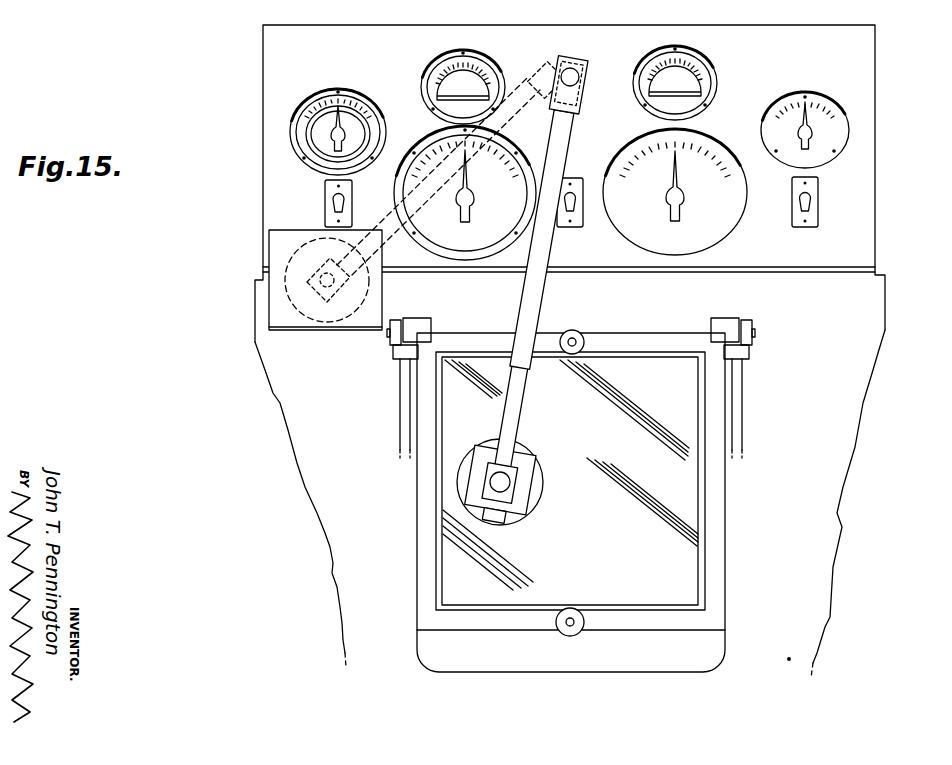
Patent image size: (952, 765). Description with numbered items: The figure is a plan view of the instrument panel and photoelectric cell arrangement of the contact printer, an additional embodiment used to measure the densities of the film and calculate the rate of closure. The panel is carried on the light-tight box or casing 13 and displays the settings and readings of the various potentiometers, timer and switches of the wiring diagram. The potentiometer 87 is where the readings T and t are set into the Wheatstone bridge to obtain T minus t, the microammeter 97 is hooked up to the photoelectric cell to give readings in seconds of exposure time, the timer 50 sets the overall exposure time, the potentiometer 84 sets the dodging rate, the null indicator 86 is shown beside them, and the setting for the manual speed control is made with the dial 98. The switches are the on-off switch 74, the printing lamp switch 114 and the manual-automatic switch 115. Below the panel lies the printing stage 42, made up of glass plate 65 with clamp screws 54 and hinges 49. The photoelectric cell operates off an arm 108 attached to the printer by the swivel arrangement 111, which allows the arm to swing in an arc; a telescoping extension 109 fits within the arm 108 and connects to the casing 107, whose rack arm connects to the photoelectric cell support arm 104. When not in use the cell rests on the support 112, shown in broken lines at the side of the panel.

The light-tight box or casing 13 is at (887, 337).
The printing stage 42 is at (733, 486).
The hinges 49 is at (390, 337).
The timer 50 is at (434, 255).
The clamp screws 54 is at (581, 337).
The glass plate 65 is at (628, 372).
The on-off switch 74 is at (352, 208).
The potentiometer 84 is at (744, 220).
The null indicator 86 is at (713, 74).
The potentiometer 87 is at (368, 101).
The microammeter 97 is at (487, 65).
The manual speed control dial 98 is at (835, 101).
The photoelectric cell support arm 104 is at (500, 516).
The casing 107 is at (544, 469).
The arm 108 is at (569, 139).
The telescoping extension 109 is at (520, 411).
The swivel arrangement 111 is at (589, 69).
The support 112 is at (314, 230).
The printing lamp switch 114 is at (582, 206).
The manual-automatic switch 115 is at (792, 203).